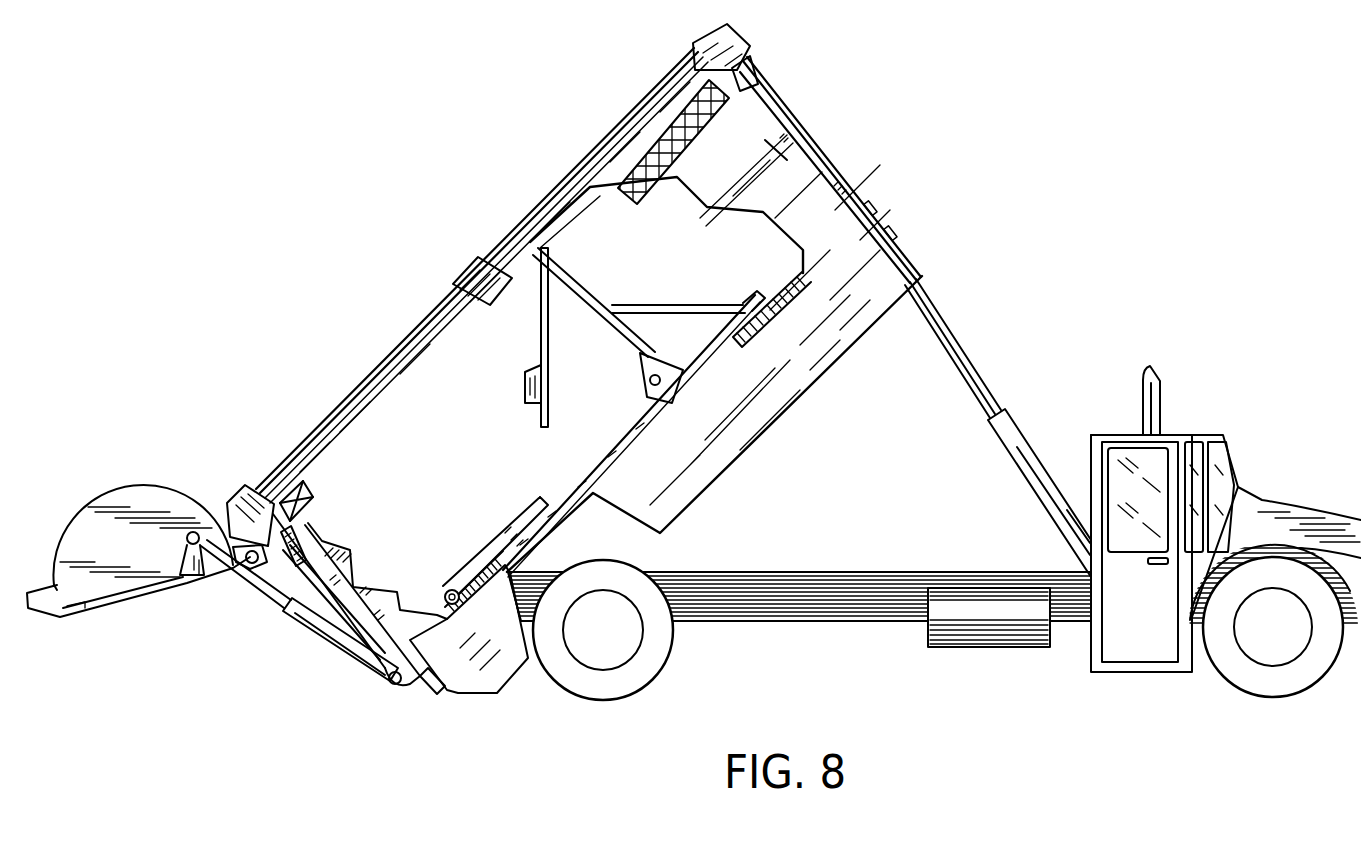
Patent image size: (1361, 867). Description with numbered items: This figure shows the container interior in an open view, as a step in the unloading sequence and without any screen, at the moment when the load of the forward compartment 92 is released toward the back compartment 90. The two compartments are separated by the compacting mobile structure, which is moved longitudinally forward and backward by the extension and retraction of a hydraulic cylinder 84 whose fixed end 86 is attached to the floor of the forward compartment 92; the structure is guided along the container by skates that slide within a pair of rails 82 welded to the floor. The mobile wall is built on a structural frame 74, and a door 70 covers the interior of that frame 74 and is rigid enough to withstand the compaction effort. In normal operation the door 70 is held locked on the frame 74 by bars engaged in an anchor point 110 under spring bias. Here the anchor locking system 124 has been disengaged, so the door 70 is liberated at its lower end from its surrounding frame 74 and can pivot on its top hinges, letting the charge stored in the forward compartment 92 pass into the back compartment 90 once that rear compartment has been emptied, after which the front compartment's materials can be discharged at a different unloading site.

The door 70 is at (538, 312).
The frame 74 is at (563, 237).
The rails 82 is at (743, 305).
The hydraulic cylinder 84 is at (494, 533).
The fixed end 86 is at (427, 590).
The back compartment 90 is at (420, 427).
The forward compartment 92 is at (640, 220).
The anchor point 110 is at (677, 403).
The anchor locking system 124 is at (527, 383).